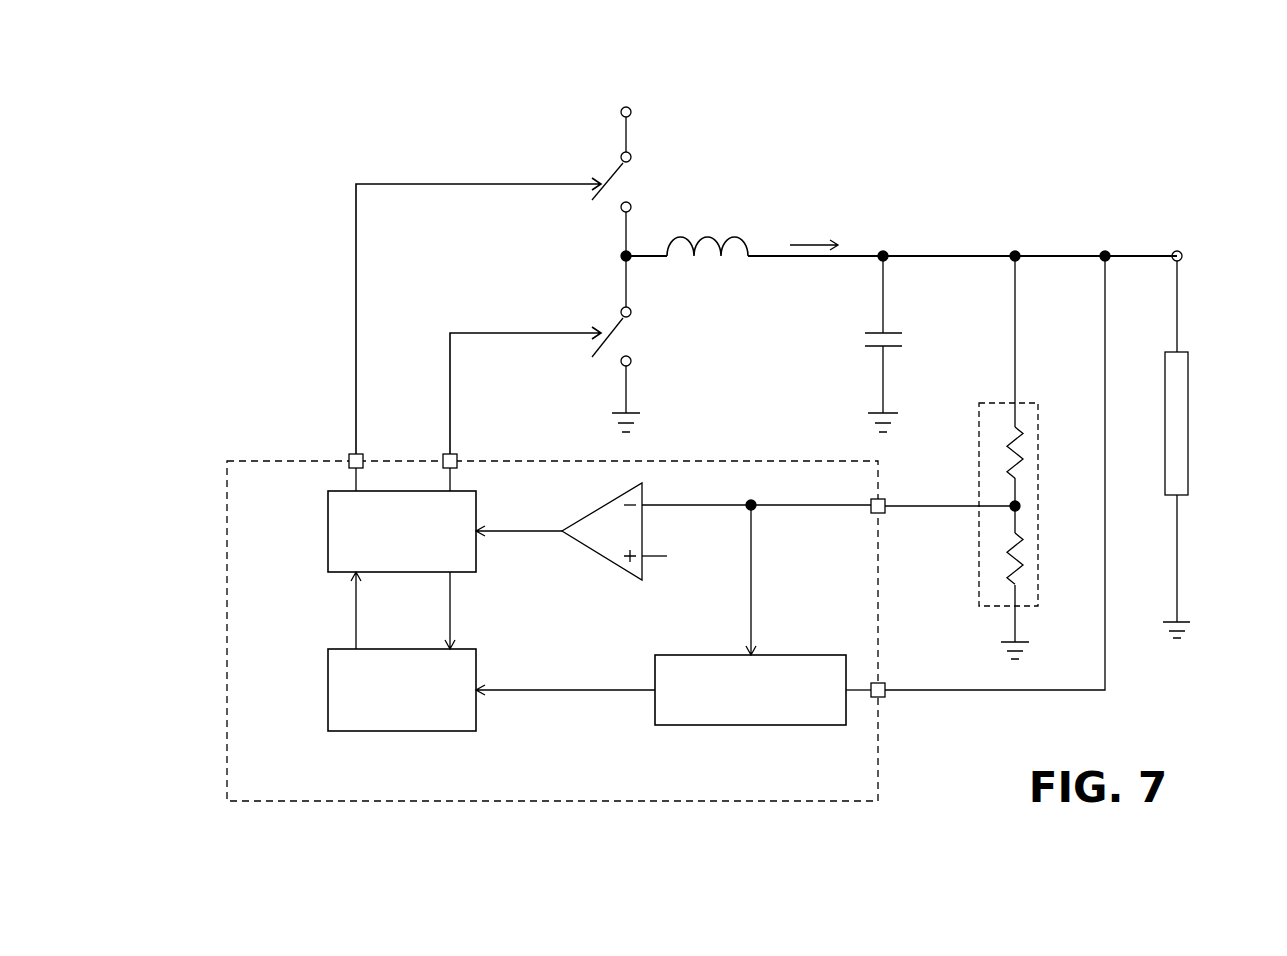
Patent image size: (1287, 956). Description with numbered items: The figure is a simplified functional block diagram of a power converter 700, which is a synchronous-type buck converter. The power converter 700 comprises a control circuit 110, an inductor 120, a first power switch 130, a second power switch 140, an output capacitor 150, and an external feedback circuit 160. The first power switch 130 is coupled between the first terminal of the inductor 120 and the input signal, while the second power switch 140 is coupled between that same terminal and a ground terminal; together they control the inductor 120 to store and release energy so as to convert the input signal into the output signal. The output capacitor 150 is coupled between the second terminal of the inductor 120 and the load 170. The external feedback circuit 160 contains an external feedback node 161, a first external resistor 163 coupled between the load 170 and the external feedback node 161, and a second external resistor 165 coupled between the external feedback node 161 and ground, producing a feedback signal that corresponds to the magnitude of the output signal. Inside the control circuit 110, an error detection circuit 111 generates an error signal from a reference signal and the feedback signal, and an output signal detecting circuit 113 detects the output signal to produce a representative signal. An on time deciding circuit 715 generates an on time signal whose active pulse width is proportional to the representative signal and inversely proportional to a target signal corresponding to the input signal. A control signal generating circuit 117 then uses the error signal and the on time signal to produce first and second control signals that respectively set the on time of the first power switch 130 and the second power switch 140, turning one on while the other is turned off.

The power converter 700 is at (1086, 119).
The control circuit 110 is at (227, 630).
The error detection circuit 111 is at (605, 557).
The output signal detecting circuit 113 is at (750, 725).
The control signal generating circuit 117 is at (328, 531).
The on time deciding circuit 715 is at (400, 731).
The inductor 120 is at (708, 236).
The first power switch 130 is at (623, 185).
The second power switch 140 is at (623, 333).
The output capacitor 150 is at (865, 340).
The external feedback circuit 160 is at (1026, 403).
The external feedback node 161 is at (1022, 507).
The first external resistor 163 is at (1002, 452).
The second external resistor 165 is at (1003, 558).
The load 170 is at (1165, 422).